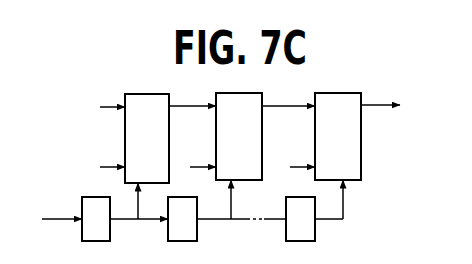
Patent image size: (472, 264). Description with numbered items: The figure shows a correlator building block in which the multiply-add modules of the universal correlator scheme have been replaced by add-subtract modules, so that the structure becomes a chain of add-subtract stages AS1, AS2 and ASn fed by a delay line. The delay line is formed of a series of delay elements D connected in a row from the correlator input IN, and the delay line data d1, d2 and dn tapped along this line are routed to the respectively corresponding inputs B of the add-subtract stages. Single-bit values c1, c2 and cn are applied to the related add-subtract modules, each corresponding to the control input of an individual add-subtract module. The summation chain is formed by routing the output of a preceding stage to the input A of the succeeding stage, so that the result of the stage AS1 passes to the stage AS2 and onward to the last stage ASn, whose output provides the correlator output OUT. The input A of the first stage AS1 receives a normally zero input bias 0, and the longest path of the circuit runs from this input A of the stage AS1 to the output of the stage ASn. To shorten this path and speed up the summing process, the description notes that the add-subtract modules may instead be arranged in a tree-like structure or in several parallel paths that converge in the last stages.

The first add-subtract module stage AS1 is at (147, 138).
The second add-subtract module stage AS2 is at (239, 136).
The last add-subtract module stage ASn is at (338, 136).
The delay line element D is at (198, 219).
The input bias 0 is at (105, 106).
The add-subtract module input A is at (114, 123).
The add-subtract module input B is at (149, 201).
The single-bit value c1 is at (103, 167).
The single-bit value c2 is at (193, 167).
The single-bit value cn is at (293, 167).
The delay line data d1 is at (139, 246).
The delay line data d2 is at (227, 246).
The delay line data dn is at (344, 246).
The correlator input IN is at (50, 220).
The correlator output OUT is at (405, 106).